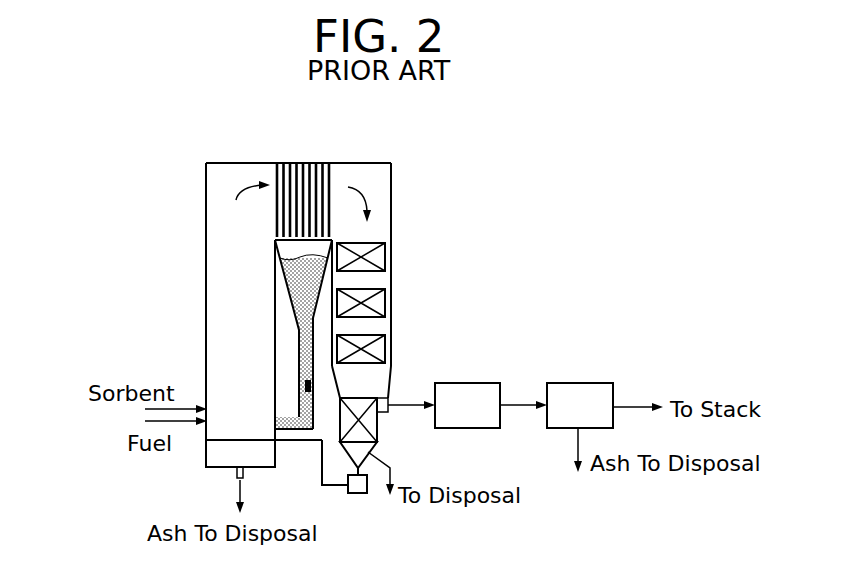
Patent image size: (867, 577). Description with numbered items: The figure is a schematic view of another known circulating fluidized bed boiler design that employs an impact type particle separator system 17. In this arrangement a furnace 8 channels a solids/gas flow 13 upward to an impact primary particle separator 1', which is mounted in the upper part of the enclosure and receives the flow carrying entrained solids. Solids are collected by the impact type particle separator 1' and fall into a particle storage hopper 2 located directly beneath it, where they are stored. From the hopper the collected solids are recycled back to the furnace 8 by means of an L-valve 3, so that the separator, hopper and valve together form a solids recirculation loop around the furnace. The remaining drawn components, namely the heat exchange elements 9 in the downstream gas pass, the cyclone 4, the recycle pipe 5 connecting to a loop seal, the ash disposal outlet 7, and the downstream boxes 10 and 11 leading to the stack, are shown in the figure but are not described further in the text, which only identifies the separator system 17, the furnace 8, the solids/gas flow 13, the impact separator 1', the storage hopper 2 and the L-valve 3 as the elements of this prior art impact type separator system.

The impact type particle separator system 17 is at (128, 190).
The furnace 8 is at (220, 343).
The solids/gas flow 13 is at (236, 200).
The impact primary particle separator 1' is at (320, 179).
The particle storage hopper 2 is at (293, 277).
The L-valve 3 is at (297, 403).
The heat exchangers 9 is at (378, 302).
The cyclone separator 4 is at (370, 420).
The solids recycle pipe 5 is at (318, 462).
The ash disposal outlet 7 is at (390, 473).
The economizer 10 is at (460, 390).
The particulate collector 11 is at (572, 392).